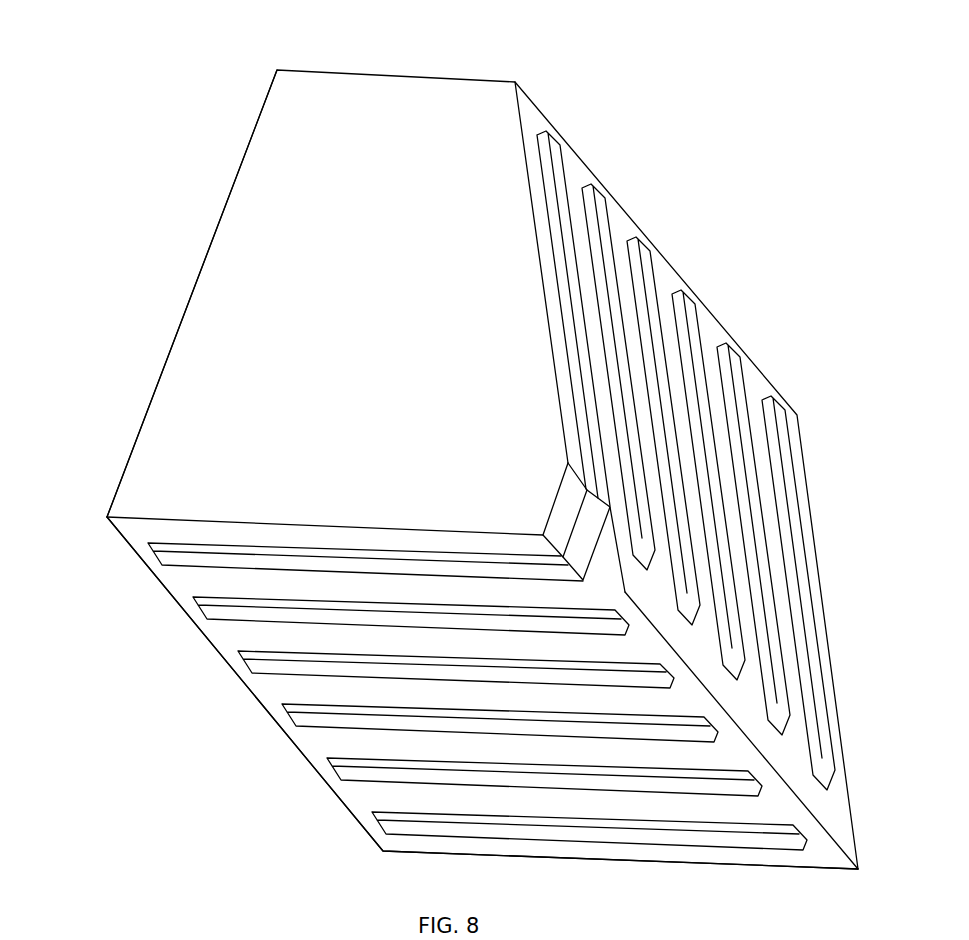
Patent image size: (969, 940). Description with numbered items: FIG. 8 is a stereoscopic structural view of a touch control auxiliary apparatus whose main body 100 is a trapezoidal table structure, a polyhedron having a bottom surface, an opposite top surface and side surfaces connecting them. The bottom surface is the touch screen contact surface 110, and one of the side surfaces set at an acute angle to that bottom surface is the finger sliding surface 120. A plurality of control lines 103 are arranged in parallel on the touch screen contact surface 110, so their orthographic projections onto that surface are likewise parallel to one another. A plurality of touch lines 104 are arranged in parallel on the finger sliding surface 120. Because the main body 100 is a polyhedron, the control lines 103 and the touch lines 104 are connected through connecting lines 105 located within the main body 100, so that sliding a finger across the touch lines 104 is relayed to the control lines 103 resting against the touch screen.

The main body 100 is at (302, 155).
The control lines 103 is at (253, 608).
The touch lines 104 is at (602, 250).
The connecting lines 105 is at (577, 542).
The touch screen contact surface 110 is at (148, 532).
The finger sliding surface 120 is at (527, 127).